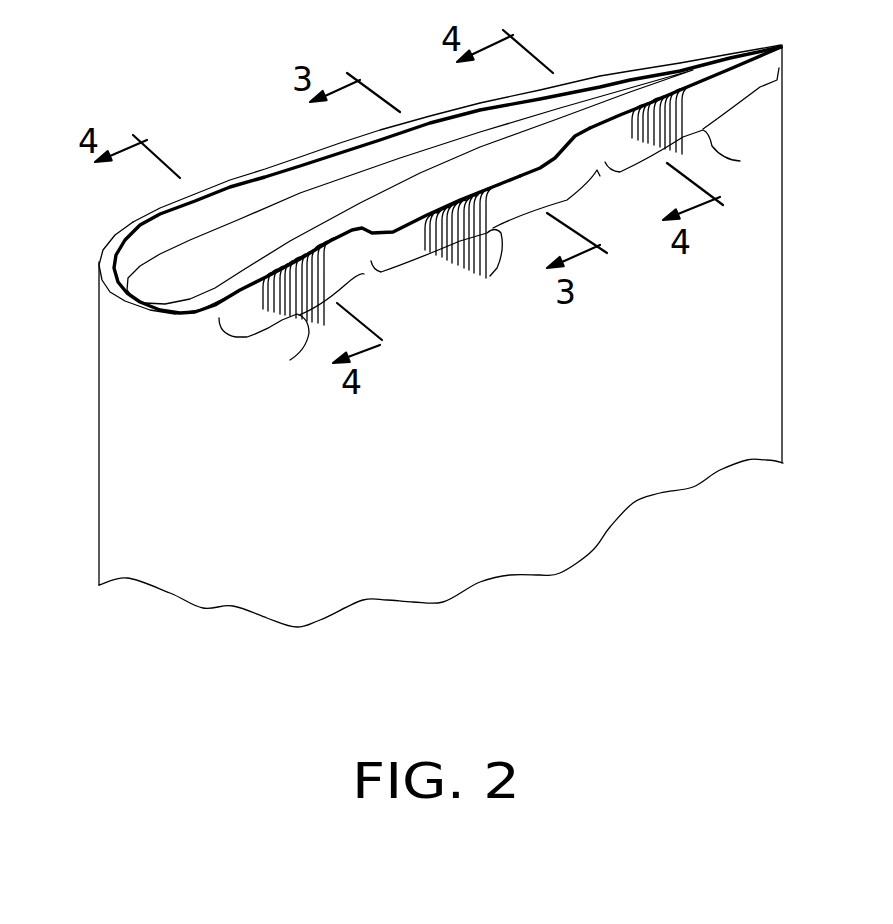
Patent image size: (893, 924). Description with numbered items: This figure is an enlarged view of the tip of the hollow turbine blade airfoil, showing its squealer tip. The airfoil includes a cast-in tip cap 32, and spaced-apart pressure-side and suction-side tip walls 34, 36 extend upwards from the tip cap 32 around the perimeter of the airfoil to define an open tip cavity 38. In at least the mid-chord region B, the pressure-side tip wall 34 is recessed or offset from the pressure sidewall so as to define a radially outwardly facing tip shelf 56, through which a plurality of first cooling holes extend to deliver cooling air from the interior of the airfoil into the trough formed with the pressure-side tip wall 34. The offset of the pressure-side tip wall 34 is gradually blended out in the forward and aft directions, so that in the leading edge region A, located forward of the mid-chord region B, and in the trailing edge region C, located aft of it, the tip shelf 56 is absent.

The tip cap 32 is at (216, 275).
The pressure-side tip wall 34 is at (633, 102).
The suction-side tip wall 36 is at (228, 182).
The open tip cavity 38 is at (132, 264).
The tip shelf 56 is at (543, 167).
The leading edge region A is at (300, 305).
The mid-chord region B is at (462, 239).
The trailing edge region C is at (696, 128).